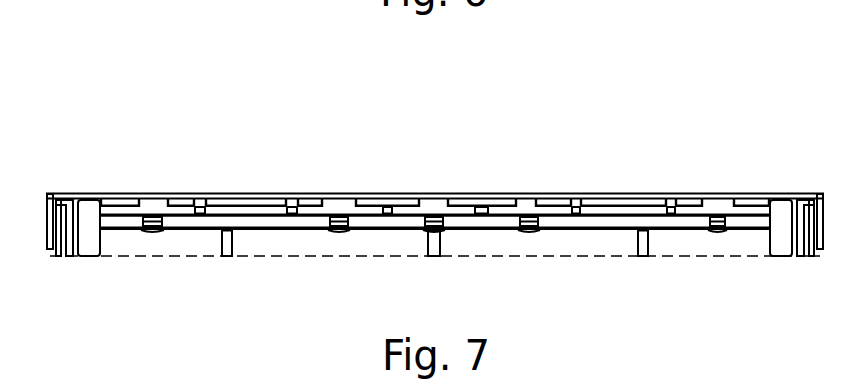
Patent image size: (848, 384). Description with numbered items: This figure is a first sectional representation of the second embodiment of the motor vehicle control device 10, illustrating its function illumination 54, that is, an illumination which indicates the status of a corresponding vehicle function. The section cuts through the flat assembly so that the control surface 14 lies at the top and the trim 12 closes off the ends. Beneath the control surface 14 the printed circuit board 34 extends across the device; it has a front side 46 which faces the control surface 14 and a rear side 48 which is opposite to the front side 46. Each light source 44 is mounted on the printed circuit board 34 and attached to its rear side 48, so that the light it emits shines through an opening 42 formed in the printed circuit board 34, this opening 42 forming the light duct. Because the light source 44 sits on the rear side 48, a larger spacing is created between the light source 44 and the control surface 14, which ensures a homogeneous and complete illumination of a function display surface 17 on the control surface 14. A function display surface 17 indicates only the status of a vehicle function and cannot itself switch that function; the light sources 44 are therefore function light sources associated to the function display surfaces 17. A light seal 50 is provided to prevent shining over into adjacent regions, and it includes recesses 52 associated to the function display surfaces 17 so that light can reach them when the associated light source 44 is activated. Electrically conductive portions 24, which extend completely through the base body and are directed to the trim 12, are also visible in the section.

The function illumination 54 is at (85, 80).
The motor vehicle control device 10 is at (186, 104).
The trim 12 is at (51, 194).
The opening 42 is at (147, 212).
The electrically conductive portion 24 is at (164, 215).
The control surface 14 is at (237, 191).
The front side 46 is at (303, 207).
The function display surface 17 is at (345, 191).
The recess 52 is at (438, 191).
The light seal 50 is at (488, 195).
The printed circuit board 34 is at (247, 222).
The light source 44 is at (341, 233).
The rear side 48 is at (489, 236).